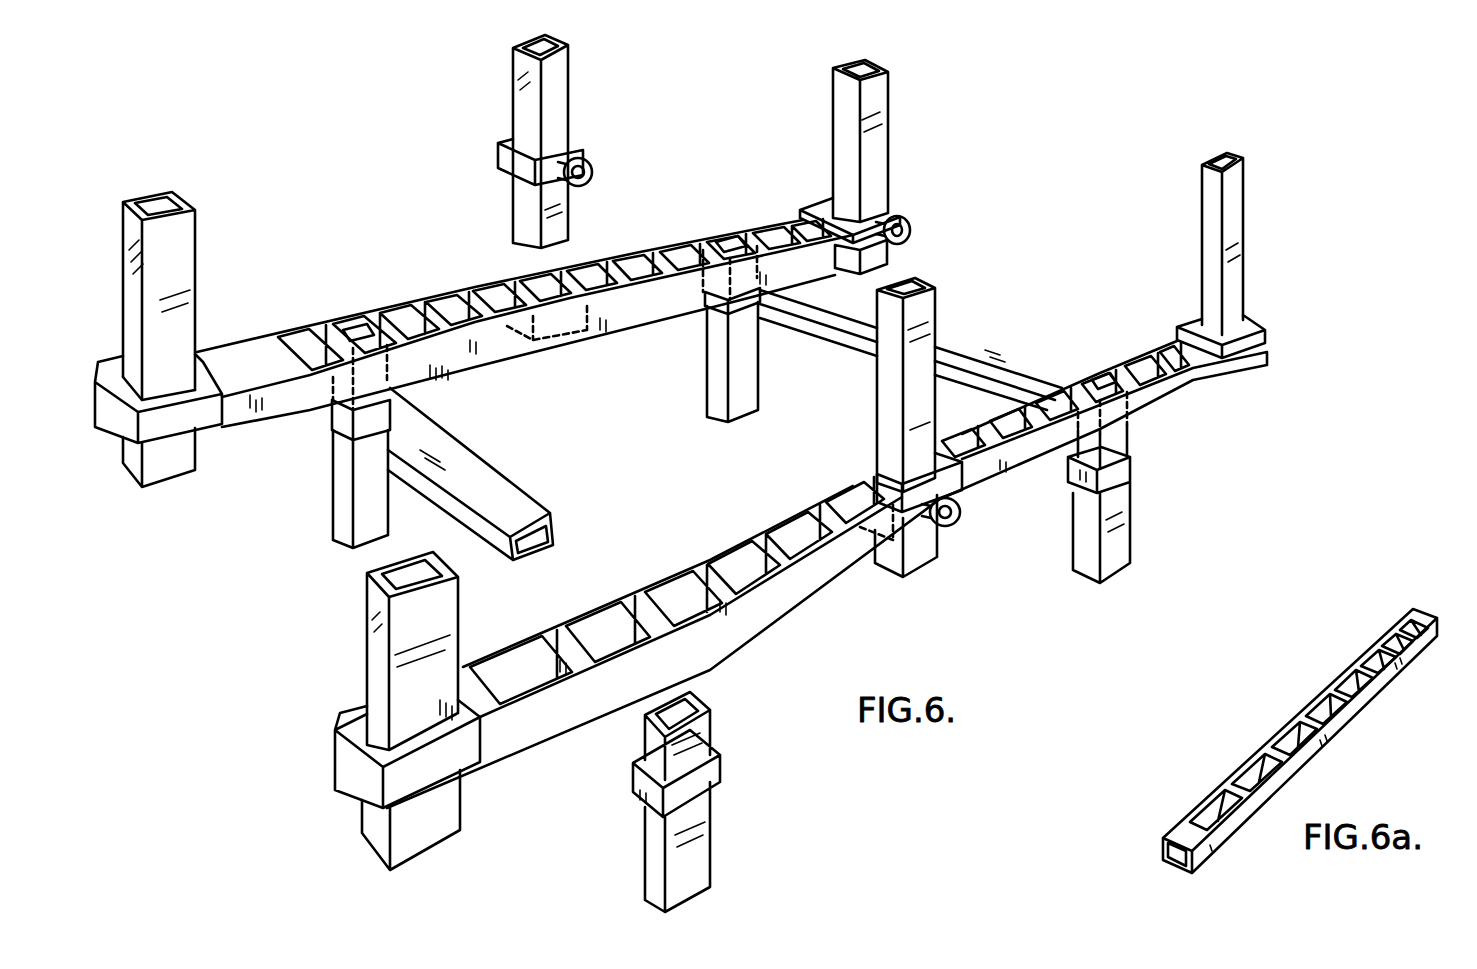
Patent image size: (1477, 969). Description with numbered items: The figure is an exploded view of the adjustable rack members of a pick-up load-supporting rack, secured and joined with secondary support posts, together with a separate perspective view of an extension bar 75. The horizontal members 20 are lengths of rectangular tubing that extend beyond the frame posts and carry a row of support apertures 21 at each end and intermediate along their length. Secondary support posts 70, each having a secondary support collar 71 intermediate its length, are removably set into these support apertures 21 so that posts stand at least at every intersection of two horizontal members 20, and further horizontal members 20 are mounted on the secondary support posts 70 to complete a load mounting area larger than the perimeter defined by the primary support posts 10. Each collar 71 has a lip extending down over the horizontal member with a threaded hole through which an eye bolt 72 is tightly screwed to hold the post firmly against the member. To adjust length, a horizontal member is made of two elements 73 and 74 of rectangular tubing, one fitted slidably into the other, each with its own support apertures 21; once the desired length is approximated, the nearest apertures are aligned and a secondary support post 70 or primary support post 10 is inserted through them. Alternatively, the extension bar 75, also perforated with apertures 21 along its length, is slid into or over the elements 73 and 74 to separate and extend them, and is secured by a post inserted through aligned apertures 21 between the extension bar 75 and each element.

In FIG. 6, the primary support post 10 is at (1123, 543).
In FIG. 6, the horizontal member 20 is at (963, 356).
In FIG. 6, the support aperture 21 is at (347, 320).
In FIG. 6, the secondary support post 70 is at (190, 274).
In FIG. 6, the secondary support collar 71 is at (570, 148).
In FIG. 6, the eye bolt 72 is at (594, 183).
In FIG. 6, the horizontal member element 73 is at (667, 243).
In FIG. 6, the horizontal member element 74 is at (535, 272).
In FIG. 6A, the extension bar 75 is at (1350, 666).